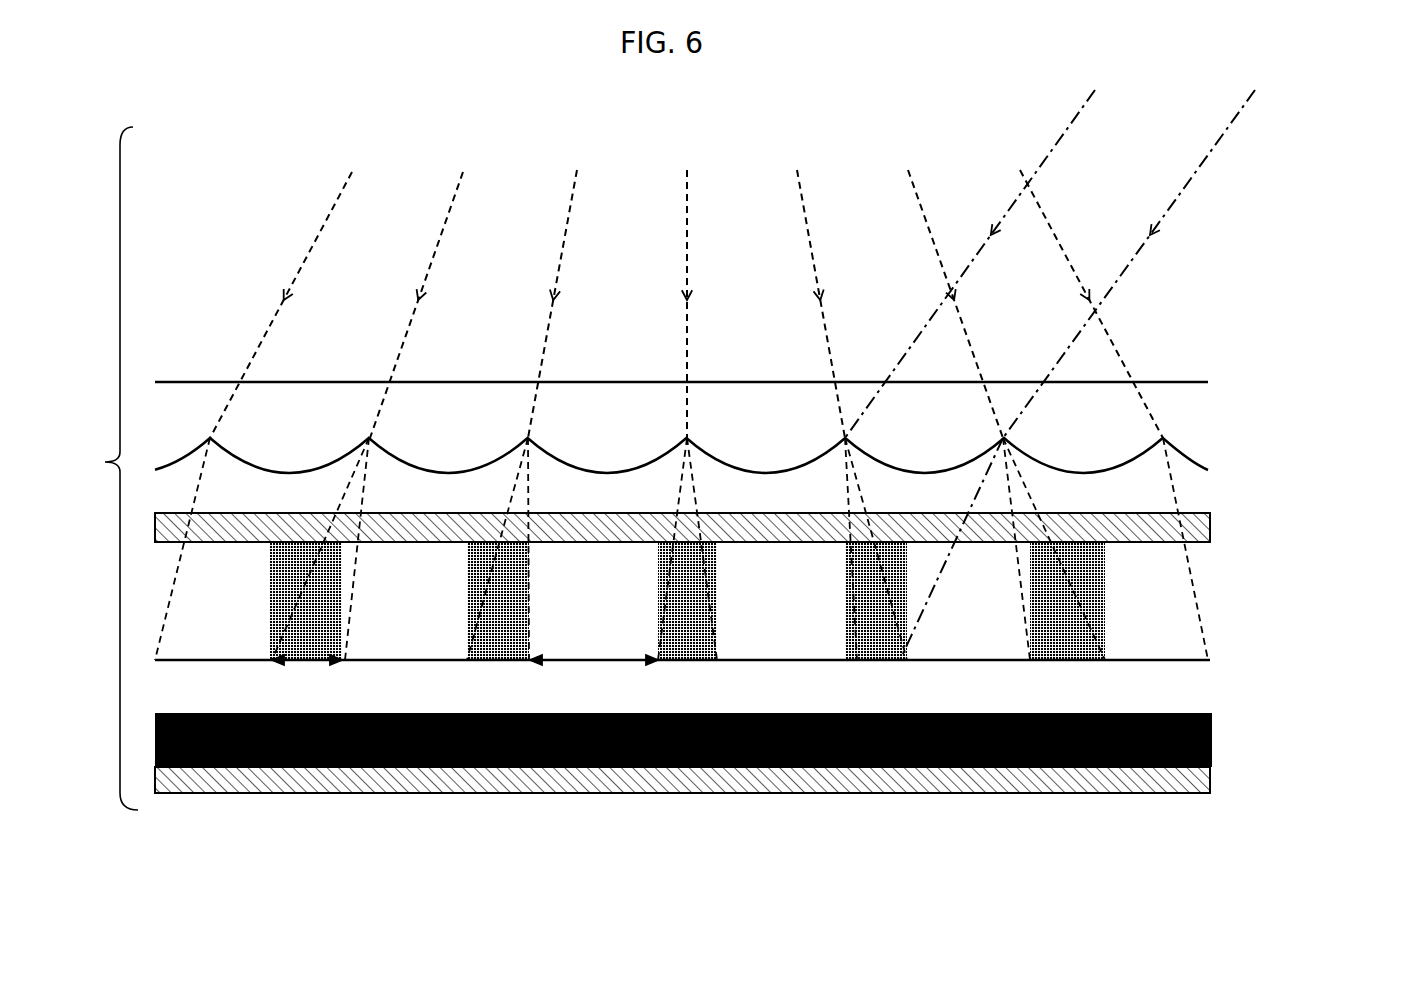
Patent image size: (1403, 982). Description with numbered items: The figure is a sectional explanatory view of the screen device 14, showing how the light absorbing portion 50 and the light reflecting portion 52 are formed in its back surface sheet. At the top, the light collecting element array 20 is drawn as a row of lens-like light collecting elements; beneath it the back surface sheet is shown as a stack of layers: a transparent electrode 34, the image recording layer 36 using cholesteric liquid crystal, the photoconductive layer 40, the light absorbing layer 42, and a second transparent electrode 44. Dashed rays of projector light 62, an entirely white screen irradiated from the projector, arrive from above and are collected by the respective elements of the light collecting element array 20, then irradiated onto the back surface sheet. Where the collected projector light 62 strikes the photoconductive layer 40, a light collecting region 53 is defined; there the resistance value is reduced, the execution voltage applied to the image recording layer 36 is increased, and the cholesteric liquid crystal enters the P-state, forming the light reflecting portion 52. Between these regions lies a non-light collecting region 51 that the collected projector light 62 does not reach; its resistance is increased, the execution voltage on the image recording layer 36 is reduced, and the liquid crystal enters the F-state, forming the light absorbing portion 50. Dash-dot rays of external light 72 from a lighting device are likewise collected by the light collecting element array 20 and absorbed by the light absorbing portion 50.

The screen device 14 is at (1188, 300).
The light collecting element array 20 is at (1205, 420).
The transparent electrode 34 is at (1210, 530).
The image recording layer 36 is at (770, 571).
The photoconductive layer 40 is at (1198, 696).
The light absorbing layer 42 is at (1213, 742).
The transparent electrode 44 is at (1110, 790).
The light absorbing portion 50 is at (503, 676).
The non-light collecting region 51 is at (302, 660).
The light reflecting portion 52 is at (742, 647).
The light collecting region 53 is at (598, 659).
The projector light 62 is at (314, 240).
The external light 72 is at (1076, 117).